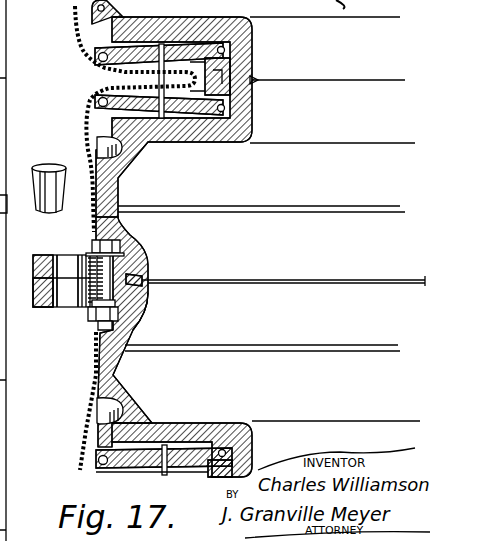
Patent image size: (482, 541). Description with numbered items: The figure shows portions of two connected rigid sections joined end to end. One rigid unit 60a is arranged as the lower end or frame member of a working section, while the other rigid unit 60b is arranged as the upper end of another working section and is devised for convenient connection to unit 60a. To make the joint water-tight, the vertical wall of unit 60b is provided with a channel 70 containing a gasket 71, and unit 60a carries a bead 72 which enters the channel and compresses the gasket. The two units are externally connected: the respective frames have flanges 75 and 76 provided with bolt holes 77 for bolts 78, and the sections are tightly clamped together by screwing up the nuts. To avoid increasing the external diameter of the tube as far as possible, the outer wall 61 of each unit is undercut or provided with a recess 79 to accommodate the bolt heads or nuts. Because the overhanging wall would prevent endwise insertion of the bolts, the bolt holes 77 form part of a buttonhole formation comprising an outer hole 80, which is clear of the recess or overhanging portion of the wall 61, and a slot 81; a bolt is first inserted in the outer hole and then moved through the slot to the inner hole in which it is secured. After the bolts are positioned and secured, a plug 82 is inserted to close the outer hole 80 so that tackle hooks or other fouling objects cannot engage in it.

The outer wall 61 is at (121, 179).
The channel 70 is at (146, 310).
The gasket 71 is at (150, 285).
The bead 72 is at (150, 266).
The flange 75 is at (33, 263).
The flange 76 is at (35, 299).
The bolt hole 77 is at (110, 262).
The bolt 78 is at (98, 330).
The recess 79 is at (120, 222).
The outer hole 80 is at (67, 266).
The slot 81 is at (90, 300).
The plug 82 is at (46, 166).
The rigid unit 60a is at (266, 114).
The rigid unit 60b is at (272, 366).